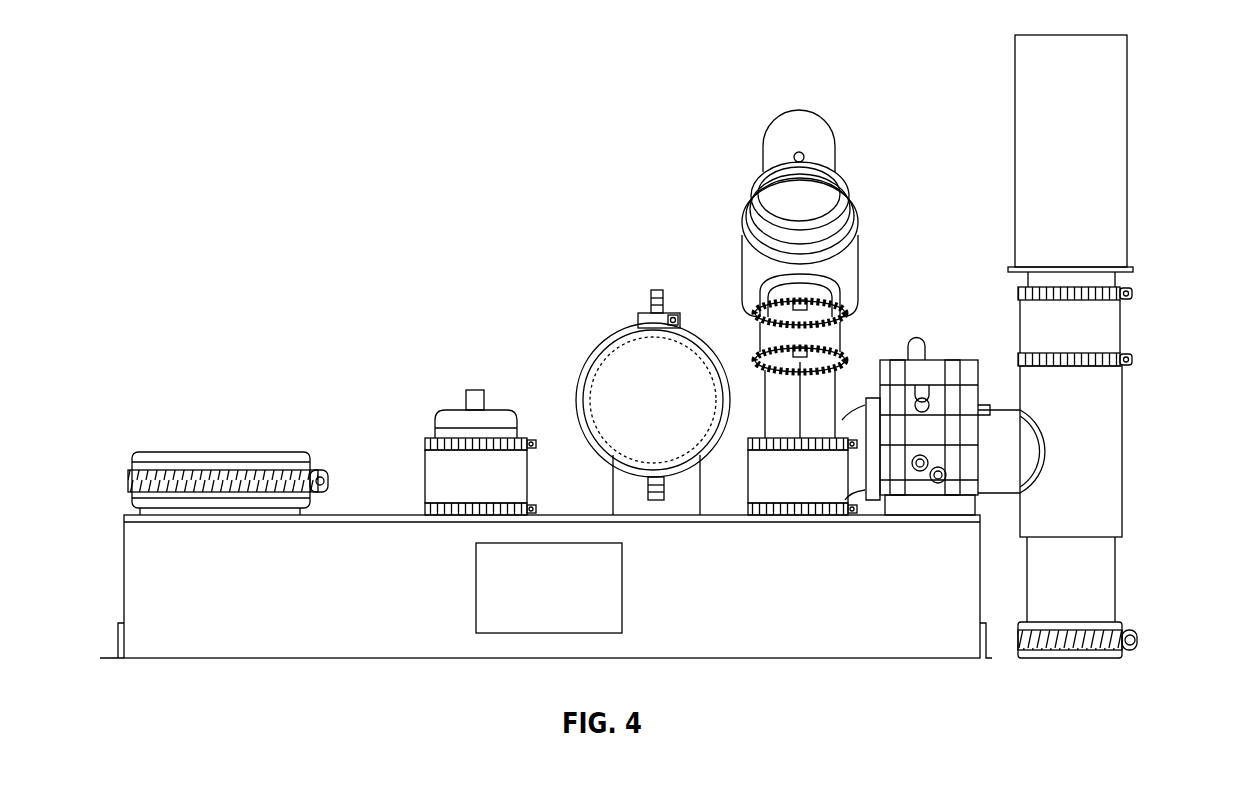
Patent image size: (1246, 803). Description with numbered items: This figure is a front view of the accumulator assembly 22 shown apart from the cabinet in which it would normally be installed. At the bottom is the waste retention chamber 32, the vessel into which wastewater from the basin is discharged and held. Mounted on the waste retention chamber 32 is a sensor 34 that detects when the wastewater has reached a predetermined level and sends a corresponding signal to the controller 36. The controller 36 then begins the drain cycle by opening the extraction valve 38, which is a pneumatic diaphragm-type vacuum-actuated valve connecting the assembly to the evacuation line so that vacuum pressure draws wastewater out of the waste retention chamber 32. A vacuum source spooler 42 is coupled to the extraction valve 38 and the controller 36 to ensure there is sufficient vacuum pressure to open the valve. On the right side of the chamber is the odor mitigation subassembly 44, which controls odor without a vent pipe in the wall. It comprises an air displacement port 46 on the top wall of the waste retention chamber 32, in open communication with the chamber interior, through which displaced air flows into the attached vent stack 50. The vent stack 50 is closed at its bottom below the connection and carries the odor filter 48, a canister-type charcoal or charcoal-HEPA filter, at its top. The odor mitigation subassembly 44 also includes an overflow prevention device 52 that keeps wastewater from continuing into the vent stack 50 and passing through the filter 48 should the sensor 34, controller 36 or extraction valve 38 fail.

The accumulator assembly 22 is at (247, 159).
The waste retention chamber 32 is at (124, 585).
The sensor 34 is at (437, 490).
The controller 36 is at (955, 375).
The extraction valve 38 is at (863, 243).
The vacuum source spooler 42 is at (663, 375).
The odor mitigation subassembly 44 is at (1145, 237).
The air displacement port 46 is at (1030, 450).
The odor filter 48 is at (1113, 100).
The vent stack 50 is at (1110, 508).
The overflow prevention device 52 is at (1125, 330).